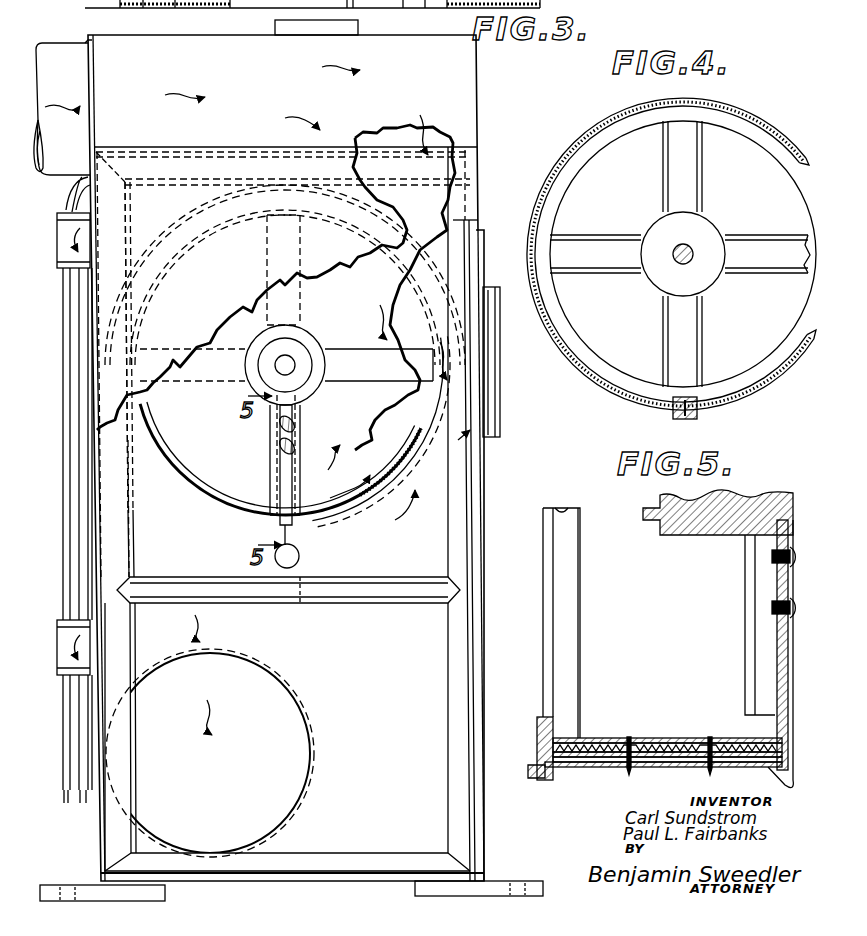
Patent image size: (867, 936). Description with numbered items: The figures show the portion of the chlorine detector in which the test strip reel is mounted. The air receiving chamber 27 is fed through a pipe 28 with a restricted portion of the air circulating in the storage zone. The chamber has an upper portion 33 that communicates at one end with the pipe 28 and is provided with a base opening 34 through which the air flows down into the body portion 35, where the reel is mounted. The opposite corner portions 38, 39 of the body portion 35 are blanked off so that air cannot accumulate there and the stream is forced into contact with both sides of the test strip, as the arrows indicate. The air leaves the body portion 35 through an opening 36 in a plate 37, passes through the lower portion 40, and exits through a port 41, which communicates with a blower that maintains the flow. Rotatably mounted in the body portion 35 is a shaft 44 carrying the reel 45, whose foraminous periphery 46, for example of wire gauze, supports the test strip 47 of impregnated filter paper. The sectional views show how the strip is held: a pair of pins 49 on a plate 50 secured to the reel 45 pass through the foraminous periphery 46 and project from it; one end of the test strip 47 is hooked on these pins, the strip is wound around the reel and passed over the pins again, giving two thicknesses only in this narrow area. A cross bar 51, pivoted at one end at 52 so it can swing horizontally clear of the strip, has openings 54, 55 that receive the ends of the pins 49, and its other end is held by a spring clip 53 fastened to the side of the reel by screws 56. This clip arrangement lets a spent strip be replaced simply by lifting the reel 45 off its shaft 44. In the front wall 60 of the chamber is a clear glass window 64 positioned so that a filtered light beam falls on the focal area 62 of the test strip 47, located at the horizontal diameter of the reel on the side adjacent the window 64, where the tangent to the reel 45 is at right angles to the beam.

In FIG. 3, the air receiving chamber 27 is at (68, 535).
In FIG. 3, the pipe 28 is at (51, 57).
In FIG. 3, the upper portion 33 is at (282, 66).
In FIG. 3, the base opening 34 is at (385, 168).
In FIG. 3, the body portion 35 is at (148, 487).
In FIG. 3, the opening 36 is at (240, 585).
In FIG. 3, the plate 37 is at (418, 585).
In FIG. 3, the corner portion 38 is at (362, 580).
In FIG. 3, the corner portion 39 is at (152, 192).
In FIG. 3, the lower portion 40 is at (415, 800).
In FIG. 3, the port 41 is at (262, 808).
In FIG. 3, the shaft 44 is at (288, 362).
In FIG. 4, the shaft 44 is at (688, 251).
In FIG. 3, the reel 45 is at (222, 510).
In FIG. 4, the reel 45 is at (608, 395).
In FIG. 4, the foraminous periphery 46 is at (560, 340).
In FIG. 5, the foraminous periphery 46 is at (600, 745).
In FIG. 4, the test strip 47 is at (700, 410).
In FIG. 5, the test strip 47 is at (600, 770).
In FIG. 5, the pins 49 is at (700, 745).
In FIG. 5, the plate 50 is at (733, 738).
In FIG. 5, the cross bar 51 is at (557, 770).
In FIG. 5, the pivot 52 is at (540, 765).
In FIG. 5, the spring clip 53 is at (778, 692).
In FIG. 5, the opening 54 is at (635, 765).
In FIG. 5, the opening 55 is at (712, 765).
In FIG. 3, the screws 56 is at (298, 443).
In FIG. 5, the screws 56 is at (772, 605).
In FIG. 3, the front wall 60 is at (484, 684).
In FIG. 3, the focal area 62 is at (440, 360).
In FIG. 3, the window 64 is at (500, 412).